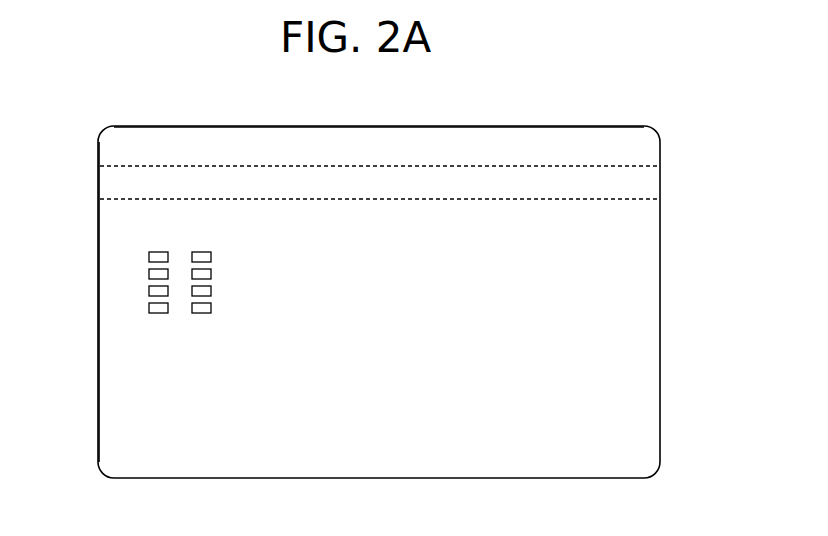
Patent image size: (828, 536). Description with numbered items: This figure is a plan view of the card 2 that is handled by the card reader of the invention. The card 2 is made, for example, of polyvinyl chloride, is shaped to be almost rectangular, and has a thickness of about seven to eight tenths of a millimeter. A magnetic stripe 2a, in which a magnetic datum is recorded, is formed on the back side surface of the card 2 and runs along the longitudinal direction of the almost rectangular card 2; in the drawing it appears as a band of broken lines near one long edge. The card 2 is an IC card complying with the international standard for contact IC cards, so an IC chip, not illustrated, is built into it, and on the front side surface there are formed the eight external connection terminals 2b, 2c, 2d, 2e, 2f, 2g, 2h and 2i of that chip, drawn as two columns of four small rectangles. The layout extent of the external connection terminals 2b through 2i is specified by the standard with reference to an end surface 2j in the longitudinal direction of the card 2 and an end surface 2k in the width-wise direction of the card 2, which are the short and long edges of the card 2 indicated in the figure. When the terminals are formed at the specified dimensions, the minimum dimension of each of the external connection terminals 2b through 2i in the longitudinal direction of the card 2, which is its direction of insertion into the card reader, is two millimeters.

The card 2 is at (676, 119).
The magnetic stripe 2a is at (467, 200).
The external connection terminal 2b is at (149, 257).
The external connection terminal 2c is at (149, 274).
The external connection terminal 2d is at (149, 291).
The external connection terminal 2e is at (149, 308).
The external connection terminal 2f is at (211, 257).
The external connection terminal 2g is at (211, 274).
The external connection terminal 2h is at (211, 291).
The external connection terminal 2i is at (211, 308).
The end surface in the longitudinal direction 2j is at (98, 396).
The end surface in the width-wise direction 2k is at (207, 125).